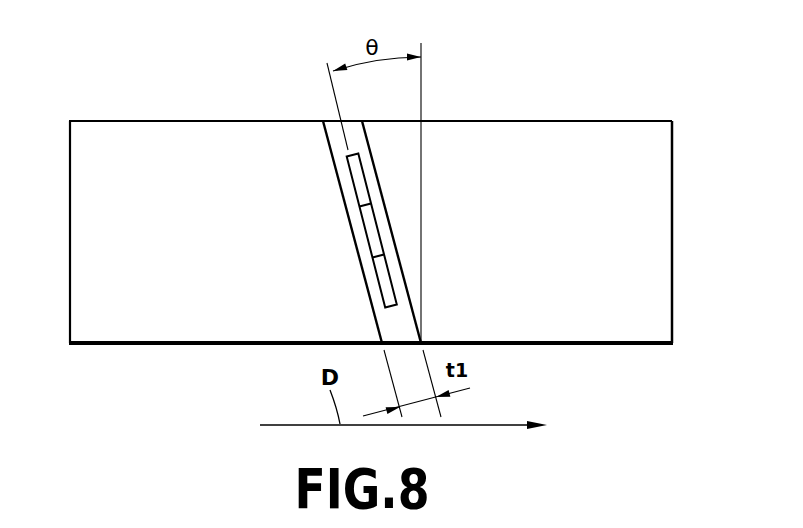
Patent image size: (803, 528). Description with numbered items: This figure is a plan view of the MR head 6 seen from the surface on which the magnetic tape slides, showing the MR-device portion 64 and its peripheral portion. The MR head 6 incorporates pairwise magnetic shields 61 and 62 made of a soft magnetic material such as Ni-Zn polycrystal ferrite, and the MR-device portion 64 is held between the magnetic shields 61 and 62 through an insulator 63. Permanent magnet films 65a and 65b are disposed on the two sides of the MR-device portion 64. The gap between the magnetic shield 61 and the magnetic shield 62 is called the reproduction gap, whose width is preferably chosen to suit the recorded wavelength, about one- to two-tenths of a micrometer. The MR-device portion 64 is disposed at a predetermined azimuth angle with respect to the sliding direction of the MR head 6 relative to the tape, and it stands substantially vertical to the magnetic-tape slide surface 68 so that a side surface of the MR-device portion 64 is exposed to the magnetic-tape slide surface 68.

The MR head 6 is at (371, 220).
The magnetic shield 61 is at (166, 323).
The magnetic shield 62 is at (602, 330).
The insulator 63 is at (335, 138).
The MR-device portion 64 is at (317, 233).
The permanent magnet film 65a is at (358, 183).
The permanent magnet film 65b is at (387, 285).
The magnetic-tape slide surface 68 is at (183, 143).